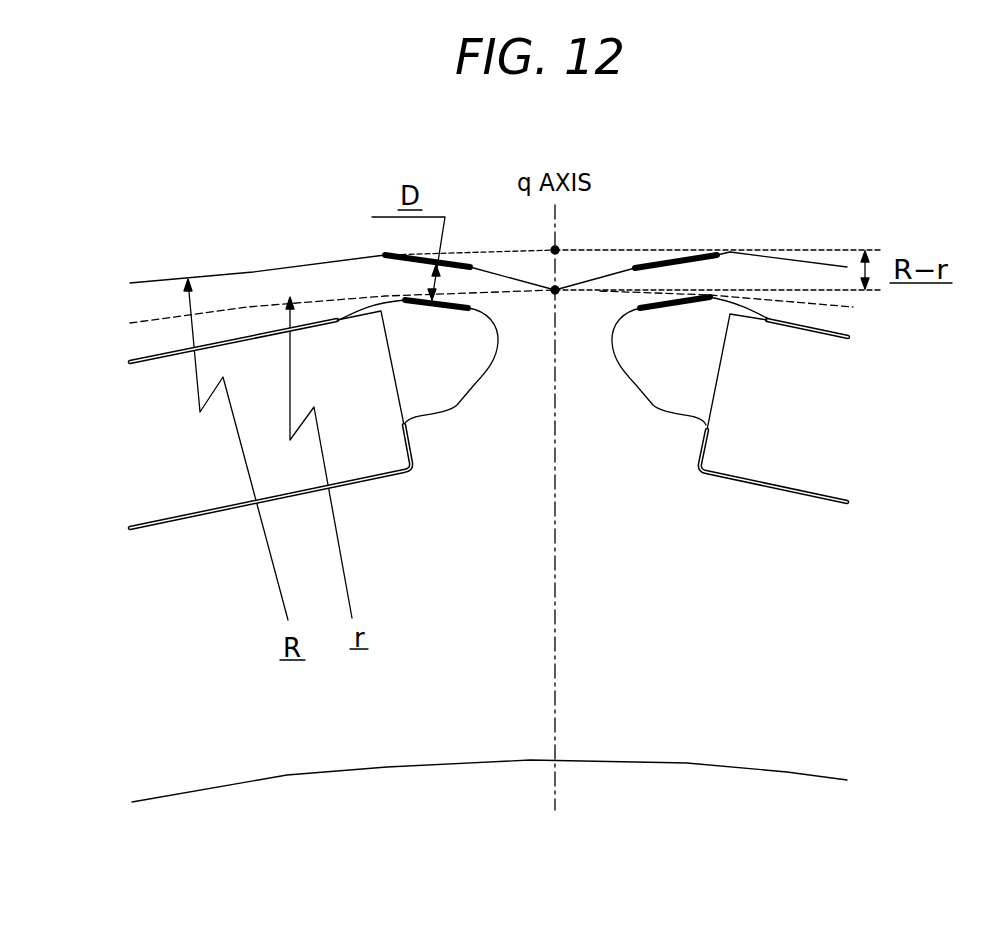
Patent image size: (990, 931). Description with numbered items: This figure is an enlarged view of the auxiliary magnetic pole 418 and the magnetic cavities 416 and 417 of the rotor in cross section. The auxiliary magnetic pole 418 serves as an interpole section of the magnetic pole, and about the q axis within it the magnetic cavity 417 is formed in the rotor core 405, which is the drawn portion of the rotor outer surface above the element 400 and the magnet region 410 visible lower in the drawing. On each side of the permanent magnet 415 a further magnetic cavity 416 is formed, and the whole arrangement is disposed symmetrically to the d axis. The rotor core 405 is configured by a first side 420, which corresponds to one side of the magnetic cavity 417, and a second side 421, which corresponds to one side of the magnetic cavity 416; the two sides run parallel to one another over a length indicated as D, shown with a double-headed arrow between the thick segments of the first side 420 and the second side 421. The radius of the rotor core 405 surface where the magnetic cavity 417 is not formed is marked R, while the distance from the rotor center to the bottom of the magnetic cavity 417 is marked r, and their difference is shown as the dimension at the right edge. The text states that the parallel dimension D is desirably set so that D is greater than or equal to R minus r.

The stator core 400 is at (484, 770).
The rotor core 405 is at (247, 308).
The magnet insertion hole 410 is at (380, 477).
The permanent magnet 415 is at (173, 405).
The magnetic cavity 416 is at (418, 343).
The magnetic cavity 417 is at (525, 267).
The auxiliary magnetic pole 418 is at (537, 352).
The first side 420 is at (660, 262).
The second side 421 is at (683, 300).